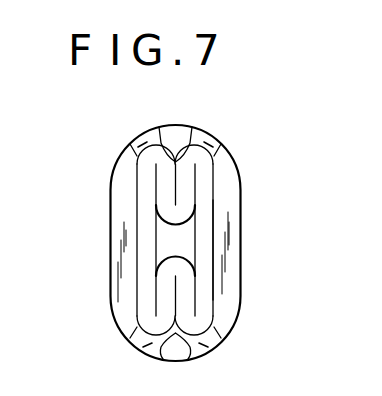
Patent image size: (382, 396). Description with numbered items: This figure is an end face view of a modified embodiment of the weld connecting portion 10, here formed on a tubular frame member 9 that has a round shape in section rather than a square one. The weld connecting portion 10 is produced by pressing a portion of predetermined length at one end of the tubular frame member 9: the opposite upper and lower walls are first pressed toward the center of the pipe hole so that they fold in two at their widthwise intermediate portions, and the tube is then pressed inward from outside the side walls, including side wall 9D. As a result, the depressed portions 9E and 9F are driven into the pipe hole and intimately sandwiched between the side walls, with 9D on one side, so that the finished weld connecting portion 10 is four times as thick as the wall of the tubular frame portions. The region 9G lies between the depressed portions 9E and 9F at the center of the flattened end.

The tubular frame member 9 is at (242, 190).
The depressed portion 9E is at (162, 200).
The turn-back portion 9G is at (161, 244).
The depressed portion 9F is at (165, 283).
The weld connecting portion 10 is at (222, 237).
The side wall 9D is at (215, 277).